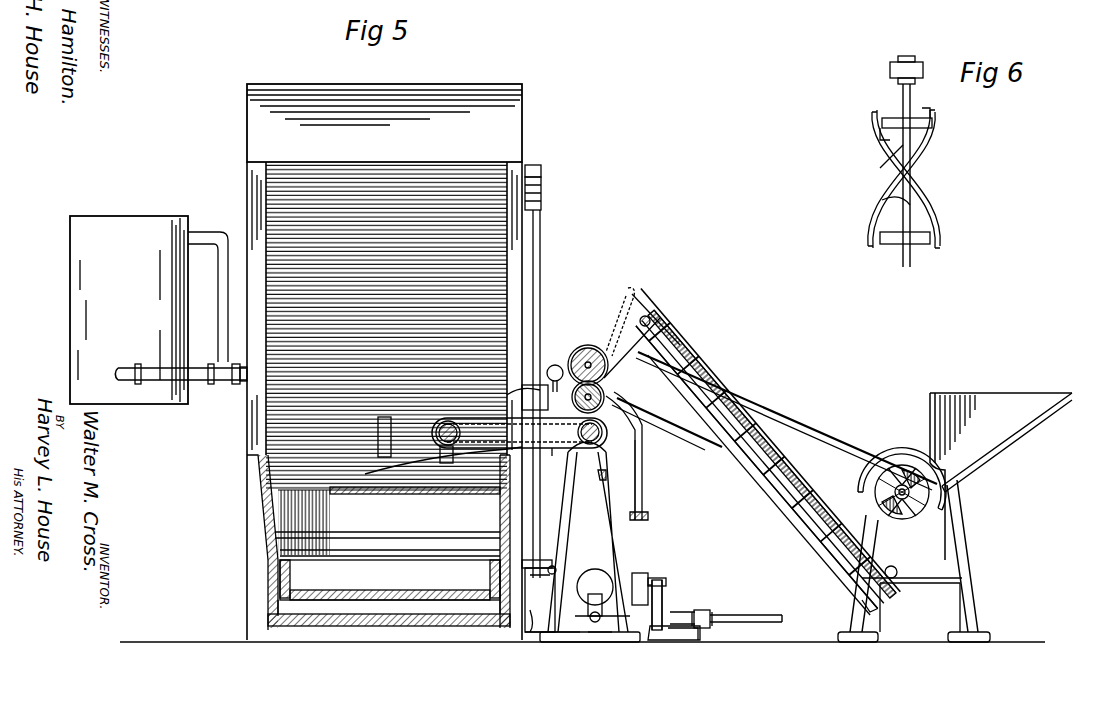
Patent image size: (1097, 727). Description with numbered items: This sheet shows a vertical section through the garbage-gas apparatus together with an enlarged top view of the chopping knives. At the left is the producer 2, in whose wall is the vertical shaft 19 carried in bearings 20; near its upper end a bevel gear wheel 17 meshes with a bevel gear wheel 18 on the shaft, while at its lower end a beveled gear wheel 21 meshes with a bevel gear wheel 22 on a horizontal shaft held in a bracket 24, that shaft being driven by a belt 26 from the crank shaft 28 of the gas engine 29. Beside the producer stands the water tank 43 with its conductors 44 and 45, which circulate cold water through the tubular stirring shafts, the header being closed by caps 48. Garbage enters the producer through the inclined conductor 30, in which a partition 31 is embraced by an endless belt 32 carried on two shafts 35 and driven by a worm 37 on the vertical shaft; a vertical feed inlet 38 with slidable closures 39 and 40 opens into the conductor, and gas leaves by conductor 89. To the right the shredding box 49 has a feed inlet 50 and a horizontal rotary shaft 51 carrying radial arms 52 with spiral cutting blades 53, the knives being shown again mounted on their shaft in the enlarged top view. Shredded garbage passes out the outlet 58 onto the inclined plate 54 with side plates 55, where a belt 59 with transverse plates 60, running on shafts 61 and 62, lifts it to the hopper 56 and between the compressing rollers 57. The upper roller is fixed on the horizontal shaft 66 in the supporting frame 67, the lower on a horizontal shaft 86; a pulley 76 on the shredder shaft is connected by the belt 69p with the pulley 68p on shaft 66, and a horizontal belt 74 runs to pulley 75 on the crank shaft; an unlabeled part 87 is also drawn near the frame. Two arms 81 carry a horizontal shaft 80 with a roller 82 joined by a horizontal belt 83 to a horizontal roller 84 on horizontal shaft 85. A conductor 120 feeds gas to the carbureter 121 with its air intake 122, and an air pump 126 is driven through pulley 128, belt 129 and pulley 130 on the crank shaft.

In FIG. 5, the producer 2 is at (384, 362).
In FIG. 5, the bevel gear wheel 17 is at (520, 380).
In FIG. 5, the bevel gear wheel 18 is at (548, 400).
In FIG. 5, the vertical shaft 19 is at (540, 520).
In FIG. 5, the bearings 20 is at (545, 562).
In FIG. 5, the beveled gear wheel 21 is at (556, 570).
In FIG. 5, the bevel gear wheel 22 is at (505, 590).
In FIG. 5, the bracket 24 is at (538, 642).
In FIG. 5, the belt 26 is at (560, 642).
In FIG. 5, the crank shaft 28 is at (596, 570).
In FIG. 5, the gas engine 29 is at (628, 572).
In FIG. 5, the inclined conductor 30 is at (262, 428).
In FIG. 5, the partition 31 is at (347, 596).
In FIG. 5, the endless belt 32 is at (300, 560).
In FIG. 5, the shafts 35 is at (543, 165).
In FIG. 5, the worm 37 is at (541, 188).
In FIG. 5, the vertical feed inlet 38 is at (392, 460).
In FIG. 5, the slidable closure 39 is at (406, 536).
In FIG. 5, the slidable closure 40 is at (445, 490).
In FIG. 5, the water tank 43 is at (135, 214).
In FIG. 5, the conductor 44 is at (143, 382).
In FIG. 5, the conductor 45 is at (211, 230).
In FIG. 5, the caps 48 is at (554, 364).
In FIG. 5, the shredding box 49 is at (900, 458).
In FIG. 5, the feed inlet 50 is at (1001, 476).
In FIG. 5, the horizontal rotary shaft 51 is at (855, 545).
In FIG. 6, the horizontal rotary shaft 51 is at (910, 192).
In FIG. 5, the radial arms 52 is at (932, 494).
In FIG. 6, the radial arms 52 is at (880, 148).
In FIG. 5, the spiral cutting blades 53 is at (950, 467).
In FIG. 6, the spiral cutting blades 53 is at (928, 205).
In FIG. 5, the inclined plate 54 is at (732, 386).
In FIG. 5, the side plates 55 is at (705, 360).
In FIG. 5, the hopper 56 is at (640, 298).
In FIG. 5, the compressing rollers 57 is at (608, 392).
In FIG. 5, the outlet 58 is at (835, 522).
In FIG. 5, the belt 59 is at (748, 408).
In FIG. 5, the transverse plates 60 is at (790, 446).
In FIG. 5, the transverse rotary shaft 61 is at (893, 580).
In FIG. 5, the transverse rotary shaft 62 is at (650, 318).
In FIG. 5, the horizontal shaft 66 is at (584, 346).
In FIG. 5, the supporting frame 67 is at (614, 492).
In FIG. 5, the pulley 68p is at (590, 340).
In FIG. 5, the belt 69p is at (800, 430).
In FIG. 5, the horizontal belt 74 is at (660, 582).
In FIG. 5, the pulley 75 is at (661, 588).
In FIG. 6, the pulley 76 is at (888, 70).
In FIG. 5, the horizontal shaft 80 is at (519, 433).
In FIG. 5, the arms 81 is at (497, 455).
In FIG. 5, the roller 82 is at (445, 452).
In FIG. 5, the horizontal belt 83 is at (556, 450).
In FIG. 5, the horizontal roller 84 is at (578, 432).
In FIG. 5, the horizontal shaft 85 is at (632, 436).
In FIG. 5, the horizontal shaft 86 is at (625, 403).
In FIG. 5, the arm 87 is at (637, 463).
In FIG. 5, the conductor 89 is at (378, 492).
In FIG. 5, the conductor 120 is at (768, 614).
In FIG. 5, the carbureter 121 is at (601, 642).
In FIG. 5, the air intake 122 is at (585, 640).
In FIG. 5, the air pump 126 is at (700, 612).
In FIG. 5, the pulley 128 is at (650, 644).
In FIG. 5, the belt 129 is at (682, 612).
In FIG. 5, the pulley 130 is at (668, 582).